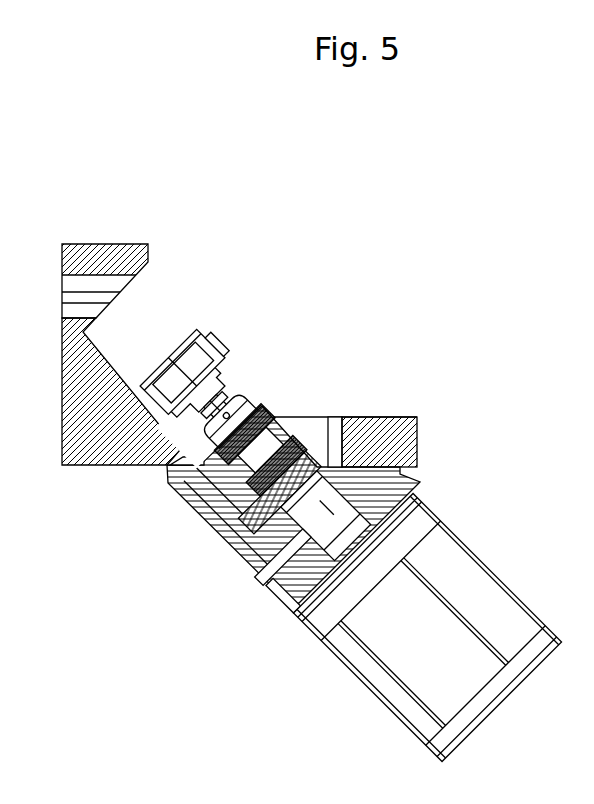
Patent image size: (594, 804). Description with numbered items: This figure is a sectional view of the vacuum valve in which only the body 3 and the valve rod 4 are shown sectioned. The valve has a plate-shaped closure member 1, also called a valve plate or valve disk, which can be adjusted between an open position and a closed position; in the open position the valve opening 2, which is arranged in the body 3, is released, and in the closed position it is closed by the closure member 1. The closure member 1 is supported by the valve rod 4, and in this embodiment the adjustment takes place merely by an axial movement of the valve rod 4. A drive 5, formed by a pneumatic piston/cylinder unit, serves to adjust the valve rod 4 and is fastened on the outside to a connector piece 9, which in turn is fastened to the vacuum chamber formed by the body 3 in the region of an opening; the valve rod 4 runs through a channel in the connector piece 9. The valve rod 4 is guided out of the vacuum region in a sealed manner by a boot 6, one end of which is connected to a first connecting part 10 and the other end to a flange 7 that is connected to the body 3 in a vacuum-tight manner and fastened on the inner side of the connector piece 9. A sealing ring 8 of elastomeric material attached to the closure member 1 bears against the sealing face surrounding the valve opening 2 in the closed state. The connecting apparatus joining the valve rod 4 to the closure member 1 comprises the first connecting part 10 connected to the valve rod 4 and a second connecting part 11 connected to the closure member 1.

The closure member 1 is at (199, 333).
The valve opening 2 is at (94, 284).
The body 3 is at (97, 455).
The valve rod 4 is at (335, 503).
The drive 5 is at (323, 720).
The boot 6 is at (273, 415).
The flange 7 is at (228, 548).
The sealing ring 8 is at (196, 330).
The connector piece 9 is at (290, 604).
The first connecting part 10 is at (238, 412).
The second connecting part 11 is at (222, 373).